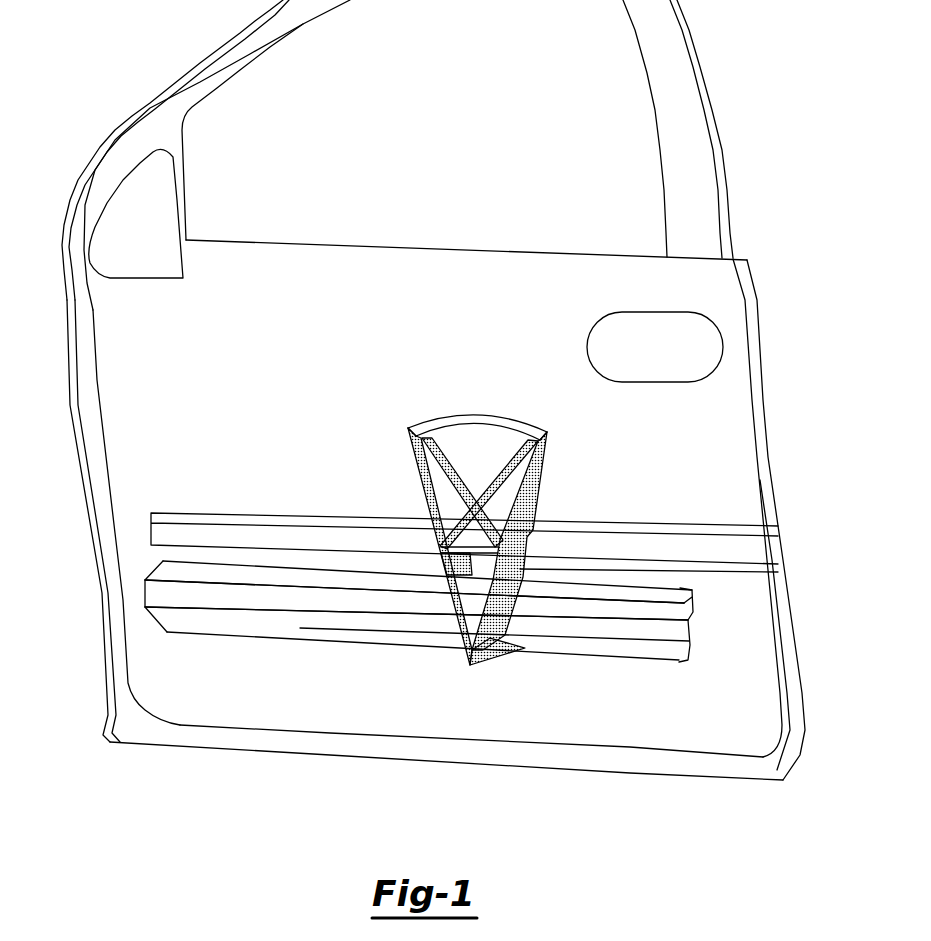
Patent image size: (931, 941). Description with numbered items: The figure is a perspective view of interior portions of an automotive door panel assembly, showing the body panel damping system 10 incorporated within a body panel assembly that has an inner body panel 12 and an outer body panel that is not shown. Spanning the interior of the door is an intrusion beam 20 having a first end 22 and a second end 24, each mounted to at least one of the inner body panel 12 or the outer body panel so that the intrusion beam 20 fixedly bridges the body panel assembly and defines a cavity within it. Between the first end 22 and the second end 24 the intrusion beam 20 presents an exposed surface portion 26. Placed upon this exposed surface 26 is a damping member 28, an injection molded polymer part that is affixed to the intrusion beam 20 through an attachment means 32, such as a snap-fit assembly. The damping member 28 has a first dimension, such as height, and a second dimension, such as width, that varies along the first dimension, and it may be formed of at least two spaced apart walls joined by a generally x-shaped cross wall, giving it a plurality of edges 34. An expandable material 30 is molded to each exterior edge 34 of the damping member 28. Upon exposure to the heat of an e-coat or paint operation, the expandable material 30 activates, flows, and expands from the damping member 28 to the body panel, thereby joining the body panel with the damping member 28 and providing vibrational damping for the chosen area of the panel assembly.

The body panel damping system 10 is at (775, 332).
The inner body panel 12 is at (732, 427).
The intrusion beam 20 is at (444, 619).
The first end 22 is at (143, 594).
The second end 24 is at (496, 643).
The exposed surface portion 26 is at (570, 613).
The damping member 28 is at (462, 577).
The expandable material 30 is at (494, 517).
The attachment means 32 is at (490, 657).
The exterior edge 34 is at (438, 487).